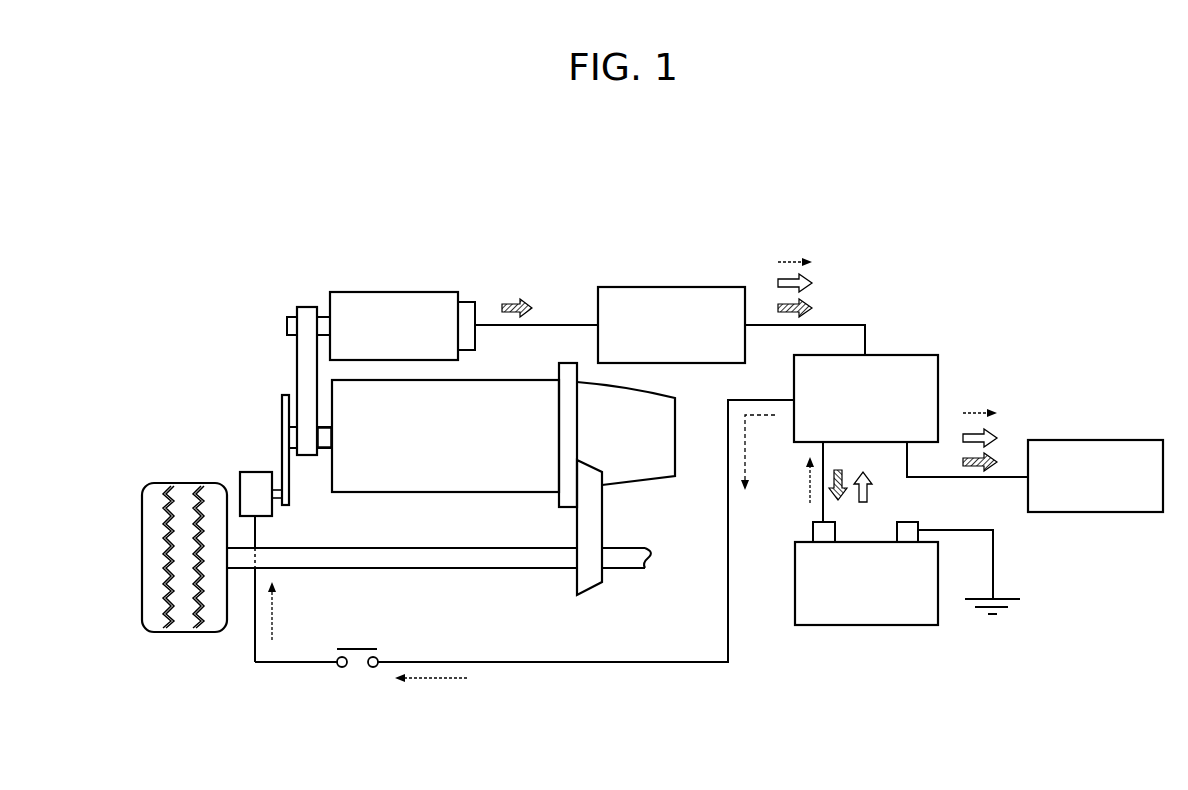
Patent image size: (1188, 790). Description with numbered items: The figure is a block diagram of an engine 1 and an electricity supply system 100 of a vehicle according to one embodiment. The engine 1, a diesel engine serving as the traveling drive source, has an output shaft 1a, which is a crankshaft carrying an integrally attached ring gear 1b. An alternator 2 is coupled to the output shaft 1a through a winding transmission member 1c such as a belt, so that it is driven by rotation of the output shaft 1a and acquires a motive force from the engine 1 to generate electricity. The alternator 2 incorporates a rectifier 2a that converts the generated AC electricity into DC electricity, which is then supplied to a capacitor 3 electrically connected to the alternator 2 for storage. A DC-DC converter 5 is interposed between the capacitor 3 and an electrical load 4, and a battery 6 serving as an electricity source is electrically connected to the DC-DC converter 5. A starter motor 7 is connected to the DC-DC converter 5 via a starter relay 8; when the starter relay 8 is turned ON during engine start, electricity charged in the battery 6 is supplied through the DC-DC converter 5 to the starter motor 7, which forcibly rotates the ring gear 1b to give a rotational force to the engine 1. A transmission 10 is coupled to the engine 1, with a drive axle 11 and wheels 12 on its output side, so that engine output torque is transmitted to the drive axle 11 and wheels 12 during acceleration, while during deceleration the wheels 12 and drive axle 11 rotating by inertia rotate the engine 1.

The engine 1 is at (443, 475).
The output shaft 1a is at (327, 450).
The ring gear 1b is at (284, 402).
The winding transmission member 1c is at (303, 360).
The alternator 2 is at (399, 292).
The rectifier 2a is at (465, 301).
The capacitor 3 is at (669, 287).
The electrical load 4 is at (1098, 440).
The DC-DC converter 5 is at (905, 355).
The battery 6 is at (866, 625).
The starter motor 7 is at (257, 472).
The starter relay 8 is at (360, 649).
The transmission 10 is at (640, 465).
The drive axle 11 is at (492, 568).
The wheels 12 is at (157, 557).
The electricity supply system 100 is at (980, 315).